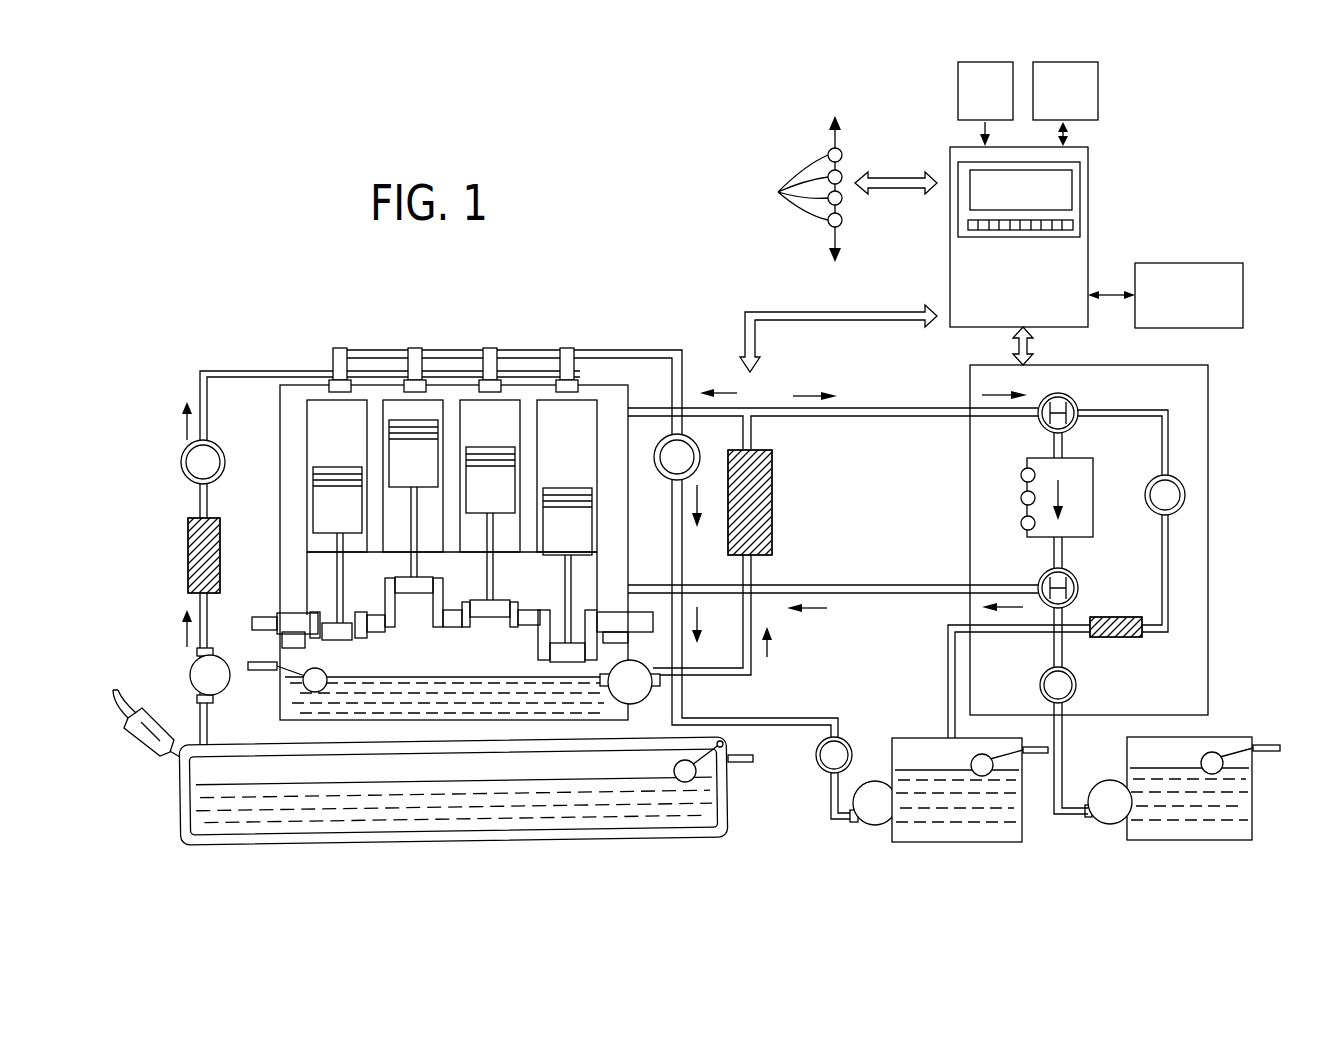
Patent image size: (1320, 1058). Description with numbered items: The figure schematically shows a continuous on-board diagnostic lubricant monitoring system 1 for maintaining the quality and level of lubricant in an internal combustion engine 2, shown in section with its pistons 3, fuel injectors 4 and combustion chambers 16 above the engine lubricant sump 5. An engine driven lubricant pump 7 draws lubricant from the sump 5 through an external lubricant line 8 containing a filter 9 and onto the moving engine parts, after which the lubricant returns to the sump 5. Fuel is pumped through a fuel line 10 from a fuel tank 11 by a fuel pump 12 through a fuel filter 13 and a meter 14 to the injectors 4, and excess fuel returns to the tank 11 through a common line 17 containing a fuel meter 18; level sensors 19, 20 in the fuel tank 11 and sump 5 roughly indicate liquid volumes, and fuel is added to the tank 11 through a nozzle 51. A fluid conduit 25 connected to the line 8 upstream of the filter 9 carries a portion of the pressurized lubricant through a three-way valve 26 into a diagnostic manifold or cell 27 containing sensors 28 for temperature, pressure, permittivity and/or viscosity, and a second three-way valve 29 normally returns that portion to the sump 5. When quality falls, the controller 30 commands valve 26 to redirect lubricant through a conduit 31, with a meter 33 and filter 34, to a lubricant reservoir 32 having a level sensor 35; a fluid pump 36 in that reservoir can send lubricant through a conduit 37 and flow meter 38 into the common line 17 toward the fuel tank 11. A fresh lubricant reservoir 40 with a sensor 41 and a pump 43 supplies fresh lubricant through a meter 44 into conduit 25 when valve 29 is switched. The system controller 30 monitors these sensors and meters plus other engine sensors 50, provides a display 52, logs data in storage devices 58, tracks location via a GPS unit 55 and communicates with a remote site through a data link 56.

The continuous on-board diagnostic lubricant monitoring system 1 is at (720, 300).
The internal combustion engine 2 is at (292, 372).
The pistons 3 is at (313, 482).
The fuel injectors 4 is at (417, 348).
The engine lubricant sump 5 is at (600, 718).
The engine driven lubricant pump 7 is at (632, 680).
The external lubricant line 8 is at (750, 577).
The lubricant filter 9 is at (772, 512).
The fuel line 10 is at (200, 373).
The fuel tank 11 is at (727, 803).
The fuel pump 12 is at (200, 675).
The fuel filter 13 is at (188, 552).
The fuel meter 14 is at (184, 464).
The combustion chambers 16 is at (307, 416).
The common line 17 is at (672, 350).
The fuel meter 18 is at (668, 472).
The fuel level sensor 19 is at (705, 760).
The lubricant level sensor 20 is at (325, 672).
The fluid conduit 25 is at (918, 408).
The three-way valve 26 is at (1074, 404).
The diagnostic manifold or cell 27 is at (1093, 492).
The sensors 28 is at (1021, 521).
The three-way valve 29 is at (1076, 582).
The system controller 30 is at (950, 150).
The conduit 31 is at (1172, 442).
The lubricant reservoir 32 is at (1018, 812).
The meter 33 is at (1184, 502).
The filter 34 is at (1125, 638).
The level sensor 35 is at (980, 757).
The fluid pump 36 is at (872, 806).
The conduit 37 is at (824, 718).
The flow meter 38 is at (842, 752).
The fresh lubricant reservoir 40 is at (1236, 802).
The sensor 41 is at (1216, 756).
The pump 43 is at (1104, 792).
The meter 44 is at (1068, 690).
The sensors 50 is at (793, 189).
The nozzle 51 is at (142, 748).
The display 52 is at (1070, 184).
The Global Position Satellite (GPS) unit 55 is at (958, 92).
The data link 56 is at (1098, 95).
The storage devices 58 is at (1196, 262).